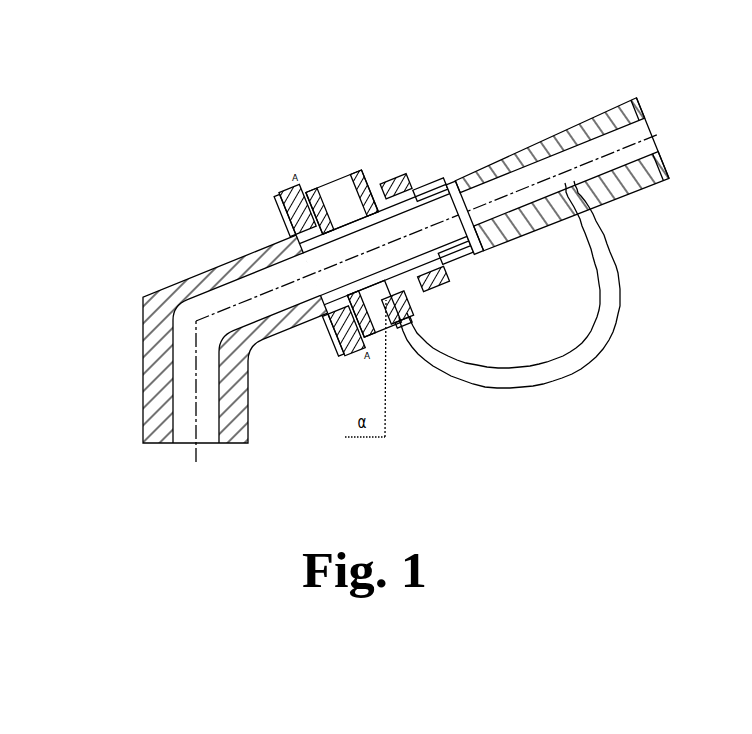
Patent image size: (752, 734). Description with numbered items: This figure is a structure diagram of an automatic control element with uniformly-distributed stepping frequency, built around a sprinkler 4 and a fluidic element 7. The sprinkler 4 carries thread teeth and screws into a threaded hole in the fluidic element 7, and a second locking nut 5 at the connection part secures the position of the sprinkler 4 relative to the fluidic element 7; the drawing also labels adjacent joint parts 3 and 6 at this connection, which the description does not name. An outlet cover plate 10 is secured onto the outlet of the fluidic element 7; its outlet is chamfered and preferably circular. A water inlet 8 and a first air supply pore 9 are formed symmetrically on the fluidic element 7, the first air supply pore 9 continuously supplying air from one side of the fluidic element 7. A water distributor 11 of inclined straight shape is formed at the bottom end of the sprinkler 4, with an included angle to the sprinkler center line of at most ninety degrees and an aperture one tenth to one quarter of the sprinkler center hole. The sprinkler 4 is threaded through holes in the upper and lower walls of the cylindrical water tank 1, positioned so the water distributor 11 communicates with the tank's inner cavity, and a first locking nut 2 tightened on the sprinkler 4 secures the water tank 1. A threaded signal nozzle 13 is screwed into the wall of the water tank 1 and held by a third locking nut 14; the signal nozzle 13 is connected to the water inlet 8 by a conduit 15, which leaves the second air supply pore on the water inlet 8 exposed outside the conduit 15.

The water tank 1 is at (300, 184).
The first locking nut 2 is at (280, 197).
The inner tube 3 is at (282, 210).
The sprinkler 4 is at (220, 268).
The second locking nut 5 is at (292, 178).
The union nut 6 is at (412, 177).
The fluidic element 7 is at (420, 185).
The water inlet 8 is at (530, 190).
The first air supply pore 9 is at (558, 195).
The outlet cover plate 10 is at (636, 122).
The water distributor 11 is at (343, 353).
The signal nozzle 13 is at (393, 315).
The third locking nut 14 is at (400, 323).
The conduit 15 is at (507, 380).